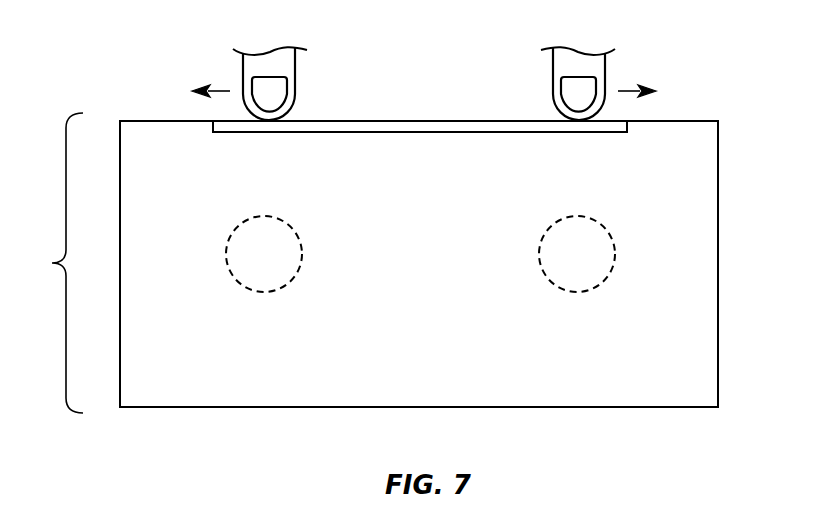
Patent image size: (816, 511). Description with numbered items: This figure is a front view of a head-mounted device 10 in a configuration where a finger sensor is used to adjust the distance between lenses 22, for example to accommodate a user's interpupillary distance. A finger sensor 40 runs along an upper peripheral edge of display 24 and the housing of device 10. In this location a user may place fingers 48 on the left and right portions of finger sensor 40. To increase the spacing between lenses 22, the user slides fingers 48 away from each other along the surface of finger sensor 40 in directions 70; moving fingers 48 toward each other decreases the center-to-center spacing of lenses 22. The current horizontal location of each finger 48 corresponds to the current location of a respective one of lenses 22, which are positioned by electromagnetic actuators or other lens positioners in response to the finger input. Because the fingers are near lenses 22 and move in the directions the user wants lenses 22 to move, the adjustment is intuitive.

The device 10 is at (55, 263).
The lenses 22 is at (302, 250).
The display 24 is at (695, 352).
The finger sensor 40 is at (431, 126).
The fingers 48 is at (288, 66).
The directions 70 is at (213, 88).